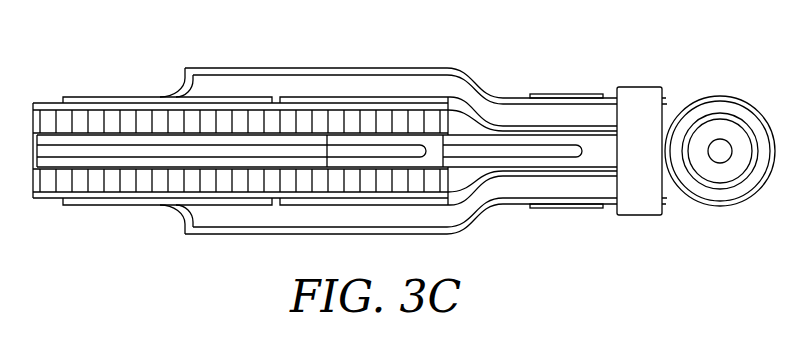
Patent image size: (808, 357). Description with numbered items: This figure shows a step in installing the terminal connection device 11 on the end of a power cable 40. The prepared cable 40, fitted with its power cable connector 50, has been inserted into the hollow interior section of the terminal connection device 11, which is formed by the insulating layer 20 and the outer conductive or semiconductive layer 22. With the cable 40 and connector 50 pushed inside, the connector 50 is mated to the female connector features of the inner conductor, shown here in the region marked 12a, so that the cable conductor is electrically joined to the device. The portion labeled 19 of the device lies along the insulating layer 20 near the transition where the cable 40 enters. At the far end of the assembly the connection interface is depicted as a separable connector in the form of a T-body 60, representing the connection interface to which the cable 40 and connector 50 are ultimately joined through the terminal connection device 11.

The terminal connection device 11 is at (604, 46).
The inner conductor 12a is at (546, 162).
The outer jacket 19 is at (456, 58).
The insulating layer 20 is at (237, 92).
The outer conductive or semiconductive layer 22 is at (110, 97).
The power cable 40 is at (296, 100).
The power cable connector 50 is at (388, 140).
The T-body 60 is at (760, 188).